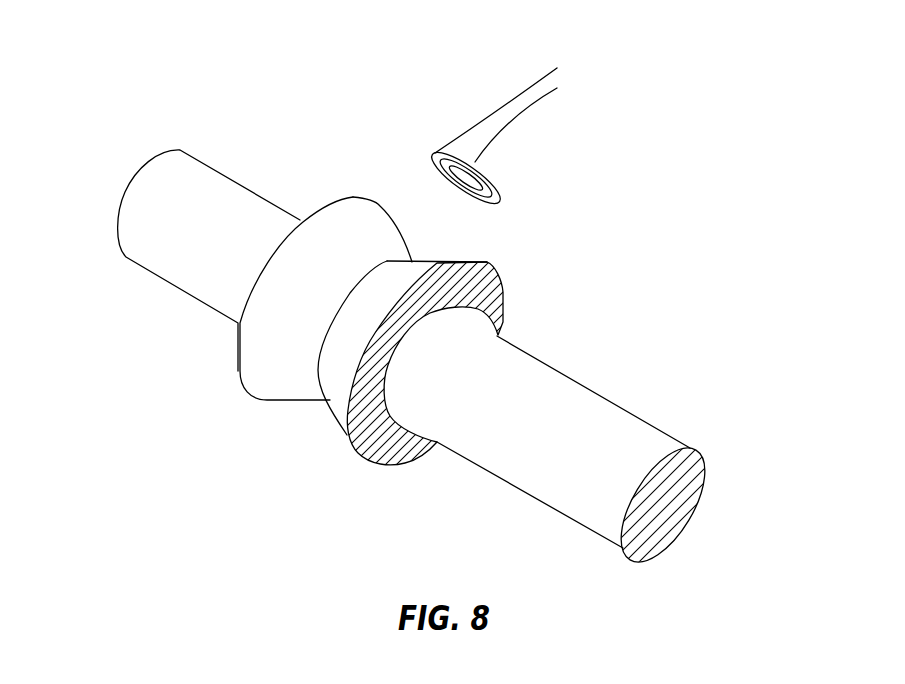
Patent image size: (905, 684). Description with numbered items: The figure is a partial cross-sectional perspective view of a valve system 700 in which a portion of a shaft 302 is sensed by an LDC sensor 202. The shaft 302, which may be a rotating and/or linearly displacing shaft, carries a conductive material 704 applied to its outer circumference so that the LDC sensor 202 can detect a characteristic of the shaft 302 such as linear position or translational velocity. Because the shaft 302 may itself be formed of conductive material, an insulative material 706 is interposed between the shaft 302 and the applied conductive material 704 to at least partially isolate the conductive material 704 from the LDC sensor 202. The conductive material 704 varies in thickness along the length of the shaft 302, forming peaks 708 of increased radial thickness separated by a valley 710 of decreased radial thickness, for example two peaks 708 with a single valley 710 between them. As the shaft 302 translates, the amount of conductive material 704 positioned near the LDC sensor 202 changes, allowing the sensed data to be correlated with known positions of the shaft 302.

The valve system 700 is at (128, 97).
The conductive material 704 is at (285, 388).
The peak 708 is at (363, 315).
The valley 710 is at (317, 362).
The insulative material 706 is at (488, 305).
The shaft 302 is at (582, 495).
The LDC sensor 202 is at (480, 165).